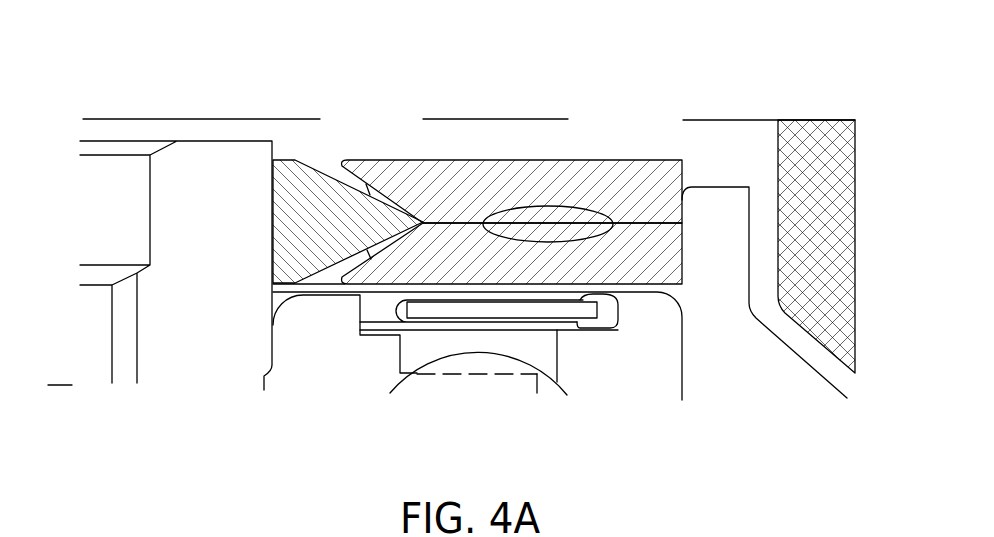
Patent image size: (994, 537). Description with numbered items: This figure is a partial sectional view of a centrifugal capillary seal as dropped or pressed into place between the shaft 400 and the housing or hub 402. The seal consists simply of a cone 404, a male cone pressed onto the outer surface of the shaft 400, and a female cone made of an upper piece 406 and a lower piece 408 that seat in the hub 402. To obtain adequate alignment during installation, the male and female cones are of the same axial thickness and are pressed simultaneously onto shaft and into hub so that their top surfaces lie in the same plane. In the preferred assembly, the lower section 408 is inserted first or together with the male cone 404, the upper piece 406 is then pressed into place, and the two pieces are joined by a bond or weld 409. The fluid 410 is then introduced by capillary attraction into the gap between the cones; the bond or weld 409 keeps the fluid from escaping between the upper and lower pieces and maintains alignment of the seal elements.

The shaft 400 is at (237, 273).
The housing or hub 402 is at (745, 353).
The cone 404 is at (290, 182).
The upper piece of female cone 406 is at (648, 173).
The lower piece of female cone 408 is at (652, 256).
The bond or weld 409 is at (532, 205).
The fluid 410 is at (350, 180).